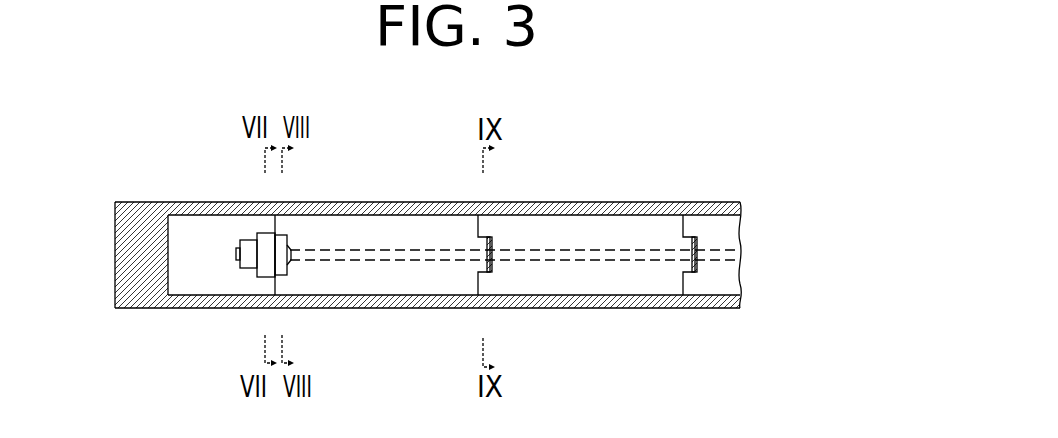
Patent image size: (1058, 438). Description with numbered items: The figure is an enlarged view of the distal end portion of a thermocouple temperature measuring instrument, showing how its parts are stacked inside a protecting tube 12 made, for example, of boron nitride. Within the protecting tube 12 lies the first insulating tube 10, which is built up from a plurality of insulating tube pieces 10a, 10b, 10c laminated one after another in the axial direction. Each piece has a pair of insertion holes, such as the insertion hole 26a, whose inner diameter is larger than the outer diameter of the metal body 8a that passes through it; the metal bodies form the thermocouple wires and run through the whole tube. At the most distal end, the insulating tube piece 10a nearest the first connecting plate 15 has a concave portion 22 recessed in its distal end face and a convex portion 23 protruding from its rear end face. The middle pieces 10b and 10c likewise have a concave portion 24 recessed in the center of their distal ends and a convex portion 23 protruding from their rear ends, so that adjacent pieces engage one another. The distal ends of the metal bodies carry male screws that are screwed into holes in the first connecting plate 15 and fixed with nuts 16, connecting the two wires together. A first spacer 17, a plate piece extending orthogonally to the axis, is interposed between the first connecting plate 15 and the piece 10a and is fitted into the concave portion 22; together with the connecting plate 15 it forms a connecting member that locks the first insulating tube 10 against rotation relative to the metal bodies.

The first insulating tube 10 is at (573, 214).
The insulating tube piece 10a is at (408, 202).
The insulating tube piece 10b is at (606, 202).
The insulating tube piece 10c is at (730, 201).
The protecting tube 12 is at (127, 308).
The first connecting plate 15 is at (268, 233).
The nut 16 is at (250, 238).
The first spacer 17 is at (278, 280).
The concave portion 22 is at (290, 236).
The convex portion 23 is at (490, 272).
The concave portion 24 is at (480, 235).
The insertion hole 26a is at (370, 256).
The metal body 8a is at (660, 262).